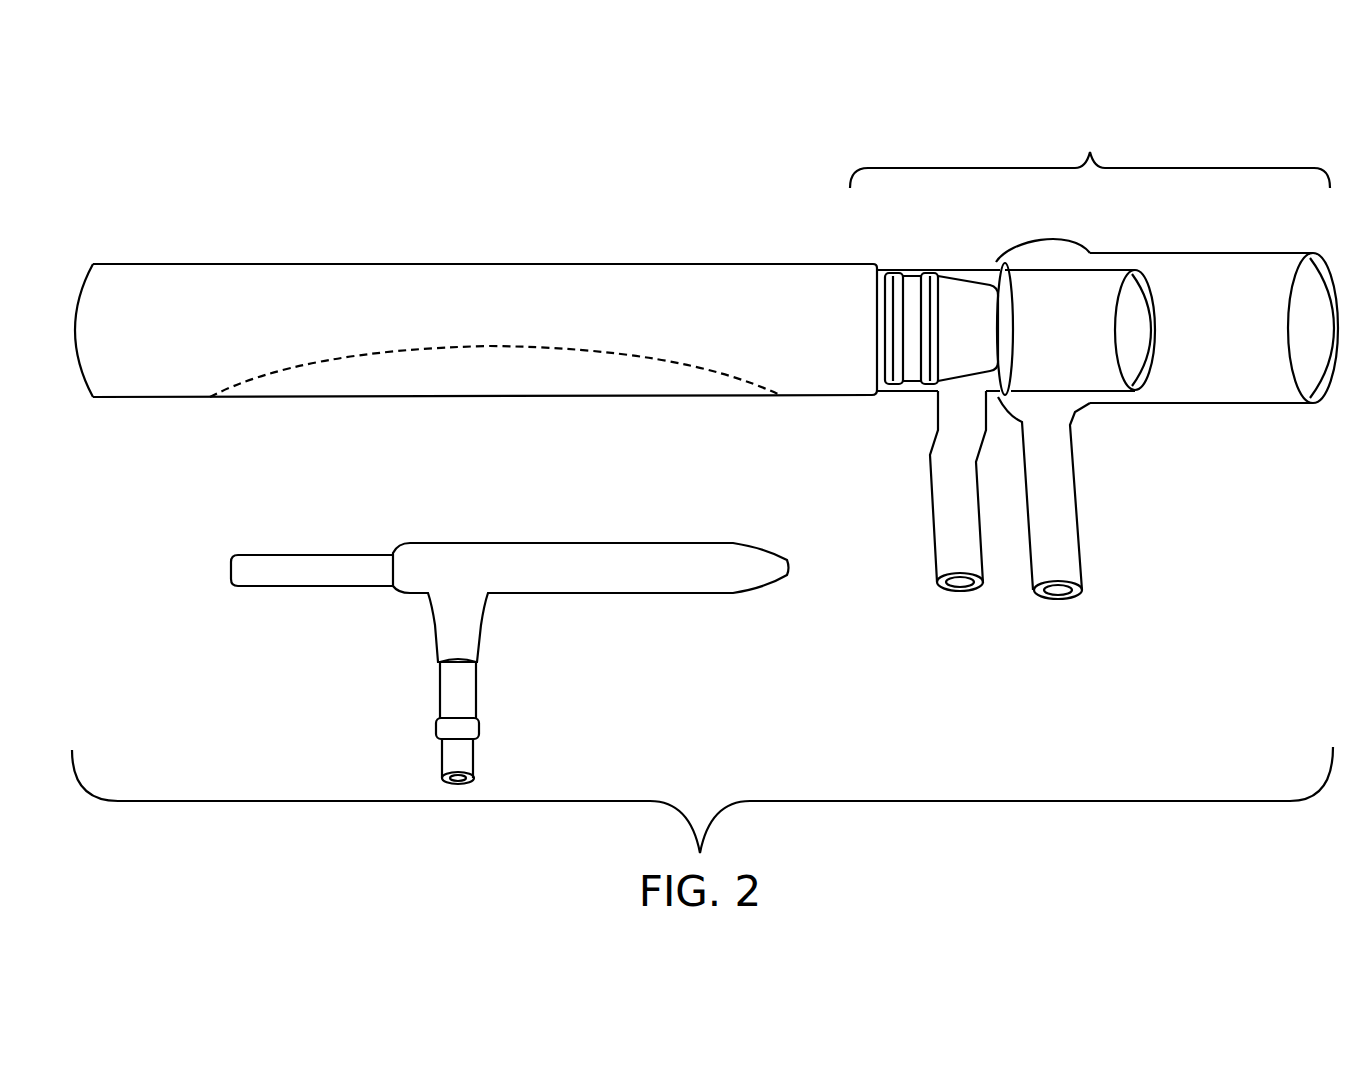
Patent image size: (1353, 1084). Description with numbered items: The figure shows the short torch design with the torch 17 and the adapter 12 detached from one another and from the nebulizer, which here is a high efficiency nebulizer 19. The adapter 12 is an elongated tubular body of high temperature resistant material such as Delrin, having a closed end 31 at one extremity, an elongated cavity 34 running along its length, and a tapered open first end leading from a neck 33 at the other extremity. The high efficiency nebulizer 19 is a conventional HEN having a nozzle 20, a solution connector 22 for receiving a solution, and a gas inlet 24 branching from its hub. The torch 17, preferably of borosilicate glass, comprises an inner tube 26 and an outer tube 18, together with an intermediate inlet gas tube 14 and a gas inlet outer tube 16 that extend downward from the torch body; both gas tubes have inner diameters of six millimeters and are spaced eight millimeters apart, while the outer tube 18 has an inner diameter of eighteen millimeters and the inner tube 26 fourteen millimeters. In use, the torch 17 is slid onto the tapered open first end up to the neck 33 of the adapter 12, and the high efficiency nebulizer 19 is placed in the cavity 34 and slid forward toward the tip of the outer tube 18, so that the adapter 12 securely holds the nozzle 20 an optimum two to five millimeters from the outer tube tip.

The adapter 12 is at (502, 280).
The intermediate inlet gas tube 14 is at (932, 520).
The gas inlet outer tube 16 is at (1085, 520).
The torch 17 is at (1090, 150).
The outer tube 18 is at (1204, 253).
The high efficiency nebulizer 19 is at (510, 626).
The nozzle 20 is at (604, 552).
The solution connector 22 is at (351, 553).
The gas inlet 24 is at (432, 660).
The inner tube 26 is at (1138, 270).
The closed end 31 is at (78, 287).
The neck 33 is at (878, 395).
The elongated cavity 34 is at (210, 397).